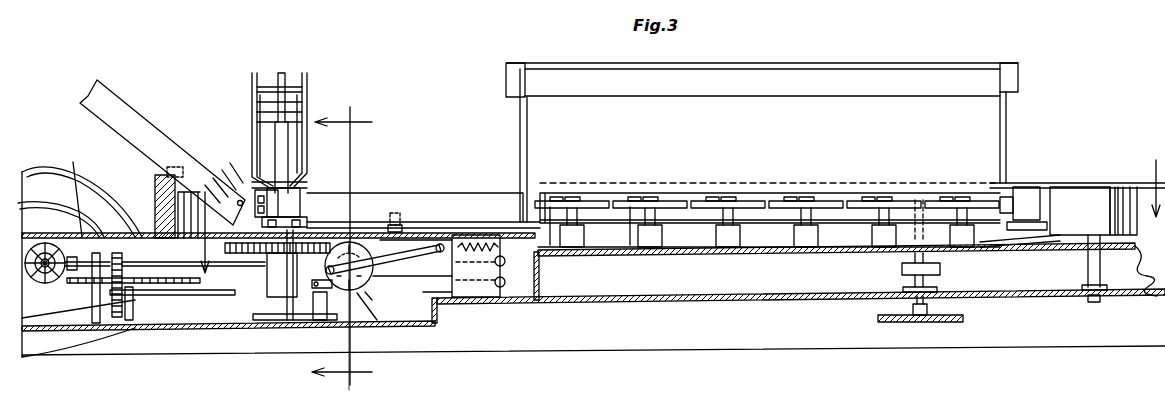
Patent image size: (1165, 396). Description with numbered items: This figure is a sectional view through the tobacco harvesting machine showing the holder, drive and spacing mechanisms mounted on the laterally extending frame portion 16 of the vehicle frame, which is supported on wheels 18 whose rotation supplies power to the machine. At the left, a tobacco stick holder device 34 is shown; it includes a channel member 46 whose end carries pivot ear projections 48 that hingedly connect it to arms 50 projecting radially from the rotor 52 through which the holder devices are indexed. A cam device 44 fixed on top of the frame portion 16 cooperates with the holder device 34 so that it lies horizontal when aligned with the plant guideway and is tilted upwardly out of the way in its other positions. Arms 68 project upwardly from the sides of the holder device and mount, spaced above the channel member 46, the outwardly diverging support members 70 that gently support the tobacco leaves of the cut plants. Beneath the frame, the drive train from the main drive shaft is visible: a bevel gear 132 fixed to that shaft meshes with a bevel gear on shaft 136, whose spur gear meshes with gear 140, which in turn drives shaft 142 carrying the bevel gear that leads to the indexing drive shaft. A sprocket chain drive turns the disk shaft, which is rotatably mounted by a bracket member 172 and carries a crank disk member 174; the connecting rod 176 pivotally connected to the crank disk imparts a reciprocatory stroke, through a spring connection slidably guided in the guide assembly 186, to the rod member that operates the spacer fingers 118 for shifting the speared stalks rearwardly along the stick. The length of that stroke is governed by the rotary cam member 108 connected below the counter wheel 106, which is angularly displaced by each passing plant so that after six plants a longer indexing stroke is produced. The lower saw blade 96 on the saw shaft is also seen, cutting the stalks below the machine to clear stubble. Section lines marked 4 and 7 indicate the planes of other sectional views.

The laterally extending frame portion 16 is at (114, 233).
The wheels 18 is at (58, 180).
The shaft 136 is at (85, 191).
The tobacco stick holder device 34 is at (142, 121).
The channel member 46 is at (163, 148).
The cam device 44 is at (156, 207).
The arms 50 is at (308, 193).
The rotor 52 is at (268, 187).
The pivot ear projections 48 is at (330, 207).
The section line 4- 4 is at (342, 249).
The section line 7- 7 is at (681, 218).
The bevel gear 132 is at (45, 283).
The gear 140 is at (115, 317).
The shaft 142 is at (187, 297).
The bracket member 172 is at (372, 303).
The crank disk member 174 is at (373, 278).
The connecting rod 176 is at (403, 254).
The guide assembly 186 is at (478, 263).
The support members 70 is at (957, 72).
The arms 68 is at (1005, 143).
The spacer fingers 118 is at (912, 198).
The lower saw blade 96 is at (953, 323).
The rotary cam member 108 is at (1070, 202).
The counter wheel 106 is at (1110, 185).